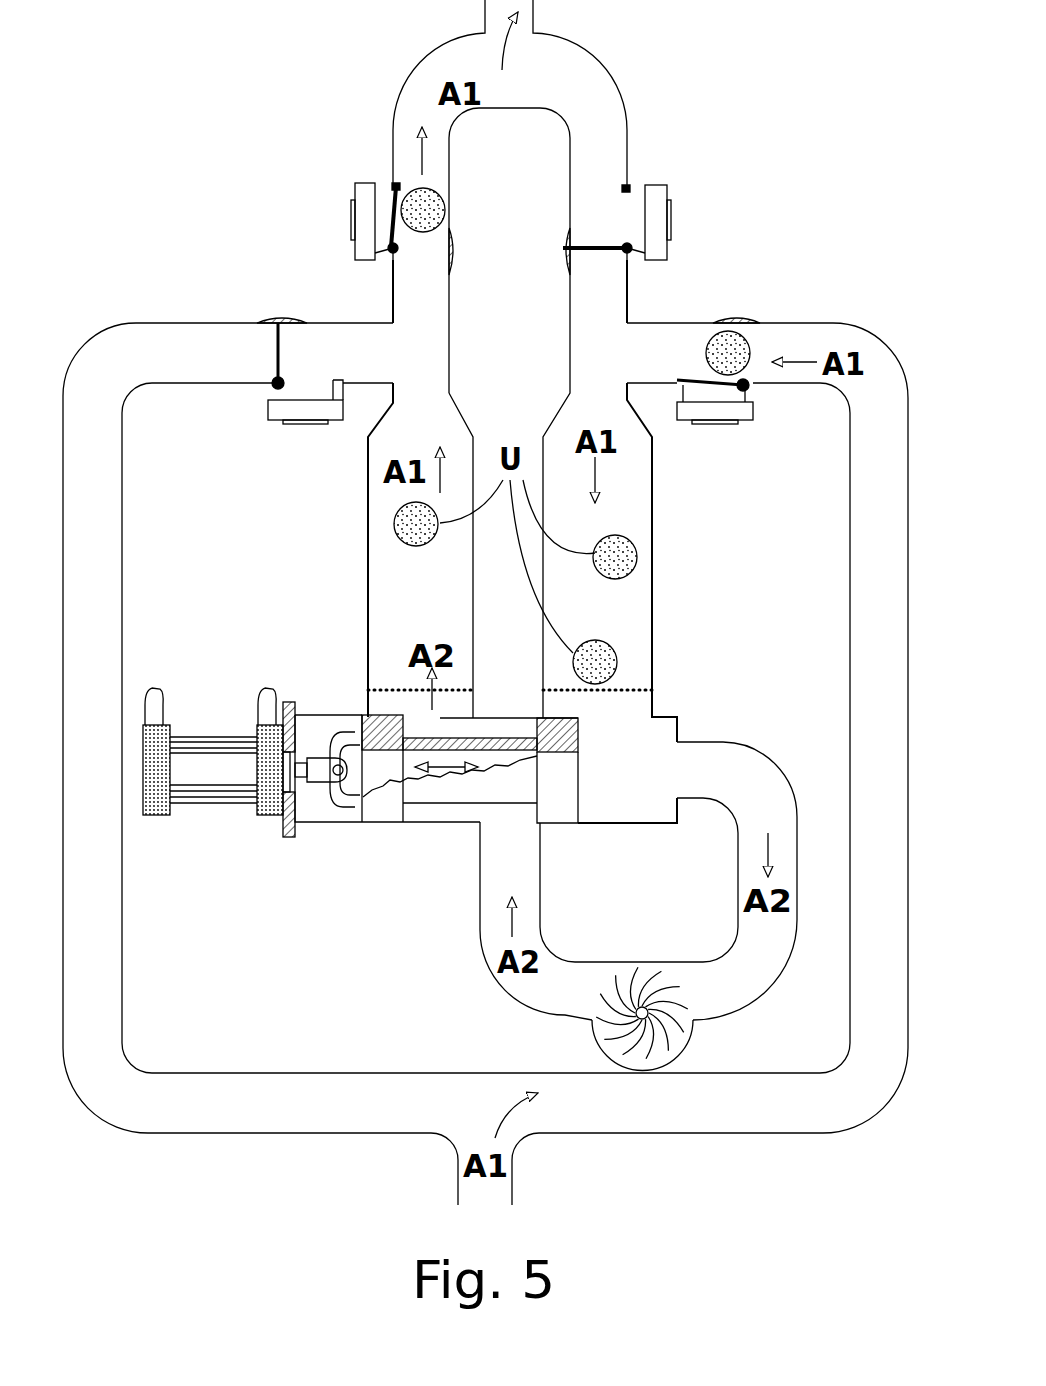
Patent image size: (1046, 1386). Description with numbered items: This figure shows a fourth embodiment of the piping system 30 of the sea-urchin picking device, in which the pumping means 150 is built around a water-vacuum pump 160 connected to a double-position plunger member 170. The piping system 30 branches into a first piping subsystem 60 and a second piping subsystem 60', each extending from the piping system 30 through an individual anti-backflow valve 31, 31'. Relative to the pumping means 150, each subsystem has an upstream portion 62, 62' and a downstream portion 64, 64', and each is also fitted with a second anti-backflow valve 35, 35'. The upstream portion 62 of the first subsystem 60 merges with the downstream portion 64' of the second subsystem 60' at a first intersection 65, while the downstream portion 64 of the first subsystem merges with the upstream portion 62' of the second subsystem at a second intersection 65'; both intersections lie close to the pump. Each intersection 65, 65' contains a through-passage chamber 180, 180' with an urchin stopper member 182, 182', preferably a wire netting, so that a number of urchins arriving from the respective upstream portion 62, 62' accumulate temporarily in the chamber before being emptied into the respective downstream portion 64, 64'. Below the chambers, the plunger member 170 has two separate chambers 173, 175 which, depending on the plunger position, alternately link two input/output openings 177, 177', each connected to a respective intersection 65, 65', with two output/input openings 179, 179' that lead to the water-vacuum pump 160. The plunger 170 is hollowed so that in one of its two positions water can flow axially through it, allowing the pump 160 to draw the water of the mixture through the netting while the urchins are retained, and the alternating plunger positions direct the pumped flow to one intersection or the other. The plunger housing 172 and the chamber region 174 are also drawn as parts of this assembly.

The piping system 30 is at (137, 323).
The first anti-backflow valve 31 is at (732, 405).
The first anti-backflow valve 31' is at (250, 399).
The second anti-backflow valve 35 is at (679, 217).
The second anti-backflow valve 35' is at (314, 214).
The first piping subsystem 60 is at (637, 161).
The second piping subsystem 60' is at (382, 161).
The upstream portion 62 is at (684, 286).
The upstream portion 62' is at (335, 272).
The downstream portion 64 is at (725, 299).
The downstream portion 64' is at (245, 297).
The first intersection 65 is at (523, 413).
The second intersection 65' is at (405, 330).
The pumping means 150 is at (730, 682).
The water-vacuum pump 160 is at (620, 1030).
The double-position plunger member 170 is at (235, 803).
The feeder housing 172 is at (377, 797).
The chamber 173 is at (445, 813).
The collection chamber 174 is at (555, 777).
The chamber 175 is at (623, 803).
The input/output opening 177 is at (609, 681).
The input/output opening 177' is at (390, 688).
The output/input opening 179 is at (688, 859).
The output/input opening 179' is at (502, 921).
The through-passage chamber 180 is at (675, 562).
The through-passage chamber 180' is at (346, 550).
The urchin stopper member 182 is at (635, 623).
The urchin stopper member 182' is at (364, 638).